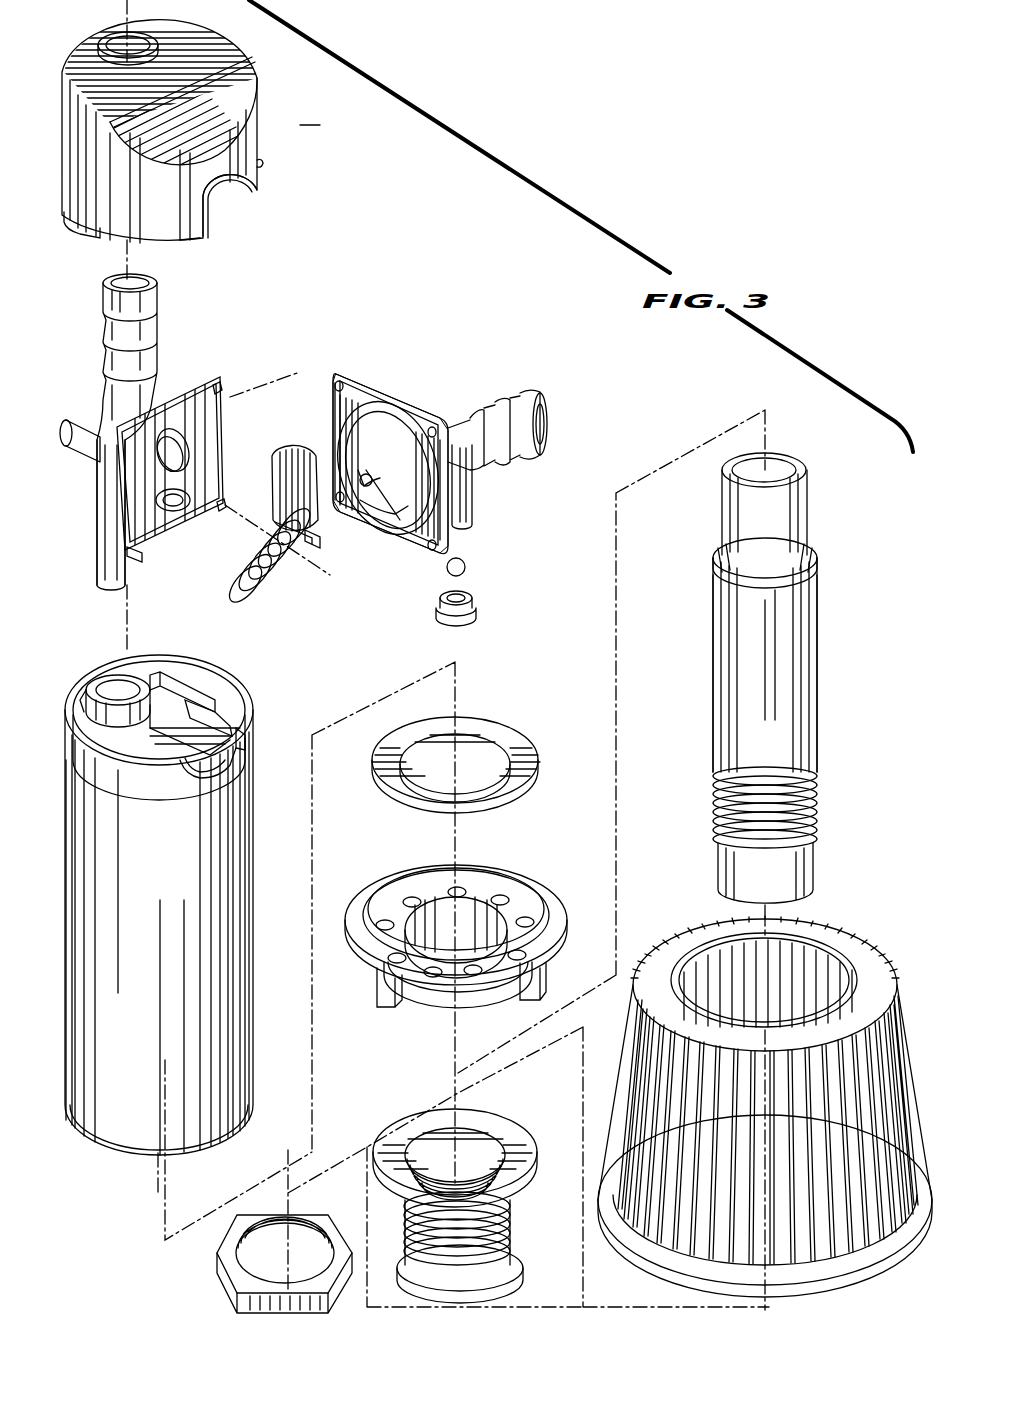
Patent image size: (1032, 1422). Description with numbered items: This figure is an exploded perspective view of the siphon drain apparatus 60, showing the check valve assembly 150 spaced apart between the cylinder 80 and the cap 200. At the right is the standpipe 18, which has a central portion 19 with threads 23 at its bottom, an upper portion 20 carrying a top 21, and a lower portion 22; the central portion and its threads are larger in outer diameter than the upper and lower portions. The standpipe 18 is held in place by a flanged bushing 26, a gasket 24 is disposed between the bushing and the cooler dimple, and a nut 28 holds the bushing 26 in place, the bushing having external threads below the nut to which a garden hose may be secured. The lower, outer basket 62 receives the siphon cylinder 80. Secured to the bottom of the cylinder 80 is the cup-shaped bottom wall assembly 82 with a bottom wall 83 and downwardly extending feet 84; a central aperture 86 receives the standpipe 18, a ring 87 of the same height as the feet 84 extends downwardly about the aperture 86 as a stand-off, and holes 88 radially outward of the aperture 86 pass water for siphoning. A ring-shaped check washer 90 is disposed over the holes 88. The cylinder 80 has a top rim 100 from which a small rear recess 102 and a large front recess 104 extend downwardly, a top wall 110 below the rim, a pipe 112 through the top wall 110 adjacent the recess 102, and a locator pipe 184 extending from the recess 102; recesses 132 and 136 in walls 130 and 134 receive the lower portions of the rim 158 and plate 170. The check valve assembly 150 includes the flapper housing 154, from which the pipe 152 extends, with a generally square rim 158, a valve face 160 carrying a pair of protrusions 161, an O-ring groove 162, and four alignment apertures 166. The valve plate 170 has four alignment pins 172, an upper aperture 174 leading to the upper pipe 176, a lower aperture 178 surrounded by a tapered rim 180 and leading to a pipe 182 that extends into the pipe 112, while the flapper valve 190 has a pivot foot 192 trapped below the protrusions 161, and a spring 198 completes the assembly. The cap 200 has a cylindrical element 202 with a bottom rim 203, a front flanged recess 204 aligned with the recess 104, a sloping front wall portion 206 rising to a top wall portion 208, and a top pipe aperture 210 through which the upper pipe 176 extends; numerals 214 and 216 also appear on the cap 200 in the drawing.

The standpipe 18 is at (824, 583).
The central portion 19 is at (818, 668).
The upper portion 20 is at (808, 496).
The top 21 is at (800, 456).
The lower portion 22 is at (815, 855).
The threads 23 is at (817, 796).
The gasket 24 is at (522, 1268).
The flanged bushing 26 is at (508, 1130).
The nut 28 is at (222, 1272).
The siphon drain apparatus 60 is at (288, 136).
The basket 62 is at (846, 915).
The cylinder 80 is at (252, 905).
The bottom wall assembly 82 is at (556, 893).
The bottom wall 83 is at (378, 962).
The feet 84 is at (548, 985).
The central aperture 86 is at (468, 905).
The ring 87 is at (440, 1004).
The holes 88 is at (522, 918).
The check washer 90 is at (522, 745).
The top rim 100 is at (246, 700).
The small recess 102 is at (100, 675).
The large recess 104 is at (246, 740).
The top wall 110 is at (236, 762).
The pipe 112 is at (160, 760).
The wall 130 is at (180, 680).
The recess 132 is at (215, 690).
The wall 134 is at (102, 740).
The recess 136 is at (132, 760).
The check valve assembly 150 is at (410, 376).
The pipe 152 is at (484, 470).
The flapper housing 154 is at (360, 434).
The rim 158 is at (415, 558).
The valve face 160 is at (396, 516).
The protrusions 161 is at (382, 510).
The O-ring groove 162 is at (410, 430).
The alignment apertures 166 is at (336, 386).
The valve plate 170 is at (140, 550).
The alignment pins 172 is at (226, 504).
The upper aperture 174 is at (178, 440).
The upper pipe 176 is at (158, 345).
The lower aperture 178 is at (195, 535).
The tapered rim 180 is at (158, 506).
The pipe 182 is at (97, 578).
The locator pipe 184 is at (90, 418).
The flapper valve 190 is at (272, 472).
The pivot foot 192 is at (314, 547).
The spring 198 is at (252, 572).
The cap 200 is at (244, 46).
The cylindrical element 202 is at (122, 222).
The bottom rim 203 is at (190, 240).
The front flanged recess 204 is at (232, 190).
The sloping front wall portion 206 is at (243, 88).
The top wall portion 208 is at (200, 40).
The top pipe aperture 210 is at (100, 30).
The tab 214 is at (85, 232).
The nub 216 is at (264, 164).